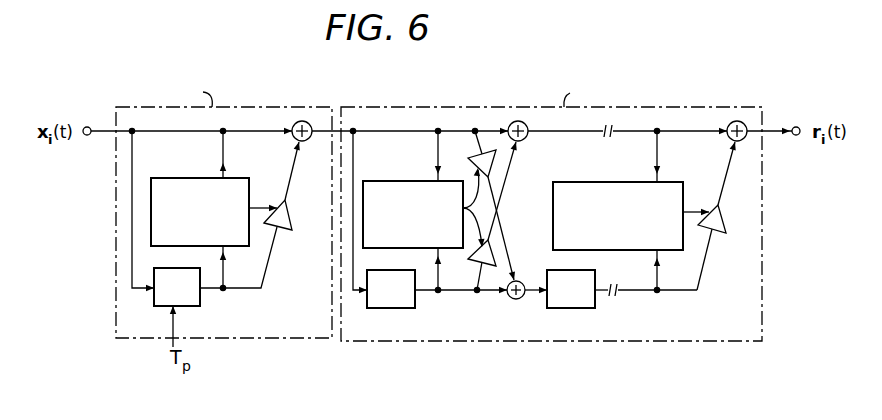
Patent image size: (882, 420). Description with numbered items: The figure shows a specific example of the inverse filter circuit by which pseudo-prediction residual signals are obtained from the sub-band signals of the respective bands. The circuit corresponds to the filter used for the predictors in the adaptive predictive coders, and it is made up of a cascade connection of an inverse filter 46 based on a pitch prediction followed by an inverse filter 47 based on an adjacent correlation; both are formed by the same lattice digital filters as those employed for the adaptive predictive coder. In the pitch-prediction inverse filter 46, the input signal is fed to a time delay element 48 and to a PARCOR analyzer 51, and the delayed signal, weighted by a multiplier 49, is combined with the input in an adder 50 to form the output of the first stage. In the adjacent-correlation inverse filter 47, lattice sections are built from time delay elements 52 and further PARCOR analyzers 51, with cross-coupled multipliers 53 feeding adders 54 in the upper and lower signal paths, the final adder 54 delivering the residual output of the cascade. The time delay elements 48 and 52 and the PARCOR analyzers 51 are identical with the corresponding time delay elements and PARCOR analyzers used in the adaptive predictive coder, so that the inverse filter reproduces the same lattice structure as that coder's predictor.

The inverse filter based on a pitch prediction 46 is at (230, 107).
The inverse filter based on an adjacent correlation 47 is at (674, 107).
The time delay element 48 is at (178, 307).
The amplifier (multiplier) 49 is at (288, 216).
The adder 50 is at (301, 121).
The PARCOR analyzer 51 is at (194, 178).
The time delay element 52 is at (390, 309).
The amplifier (multiplier) 53 is at (467, 160).
The adder 54 is at (518, 121).